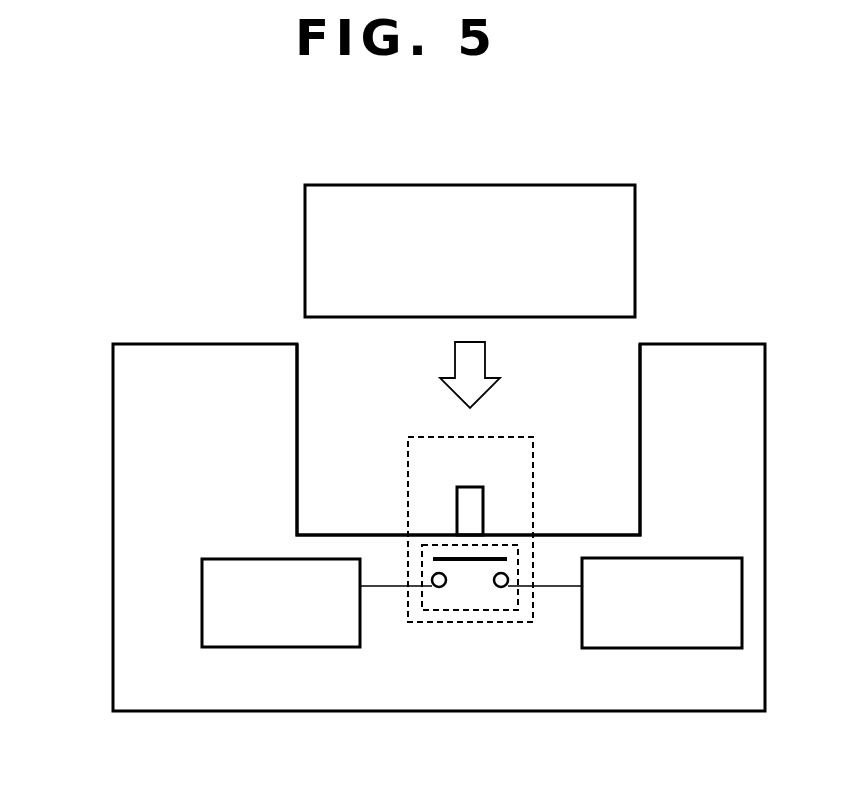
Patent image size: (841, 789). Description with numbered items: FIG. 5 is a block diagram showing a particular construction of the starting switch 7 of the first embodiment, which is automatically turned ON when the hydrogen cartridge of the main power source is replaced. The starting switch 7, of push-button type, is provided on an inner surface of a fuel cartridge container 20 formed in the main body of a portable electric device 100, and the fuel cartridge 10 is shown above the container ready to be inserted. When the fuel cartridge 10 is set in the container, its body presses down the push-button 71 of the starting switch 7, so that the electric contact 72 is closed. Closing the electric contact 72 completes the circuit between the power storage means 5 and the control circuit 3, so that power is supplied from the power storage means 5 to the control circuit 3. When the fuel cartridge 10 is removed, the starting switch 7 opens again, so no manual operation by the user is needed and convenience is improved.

The portable electric device 100 is at (113, 603).
The fuel cartridge container 20 is at (343, 484).
The fuel cartridge 10 is at (635, 250).
The starting switch 7 is at (430, 622).
The push-button 71 is at (472, 500).
The electric contact 72 is at (497, 600).
The control circuit 3 is at (279, 647).
The power storage means 5 is at (660, 648).